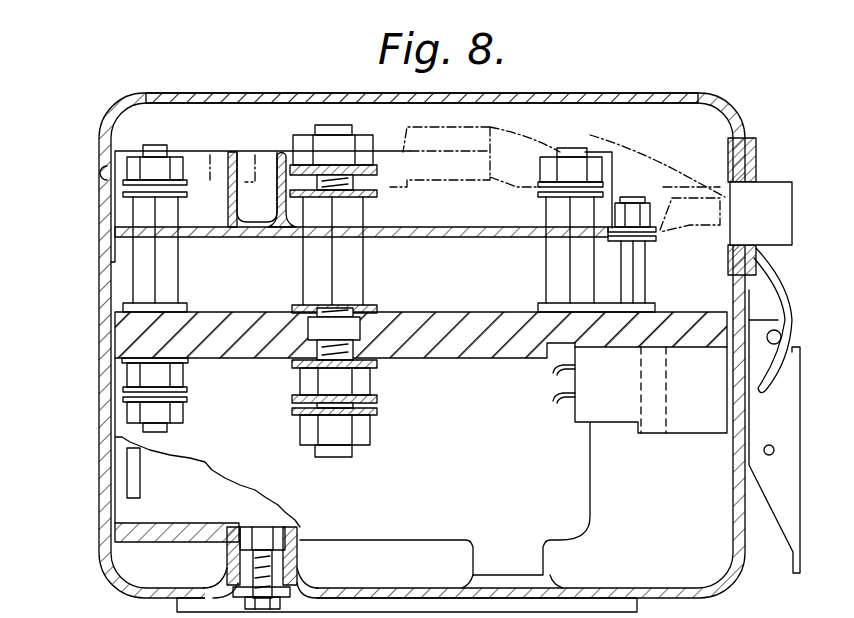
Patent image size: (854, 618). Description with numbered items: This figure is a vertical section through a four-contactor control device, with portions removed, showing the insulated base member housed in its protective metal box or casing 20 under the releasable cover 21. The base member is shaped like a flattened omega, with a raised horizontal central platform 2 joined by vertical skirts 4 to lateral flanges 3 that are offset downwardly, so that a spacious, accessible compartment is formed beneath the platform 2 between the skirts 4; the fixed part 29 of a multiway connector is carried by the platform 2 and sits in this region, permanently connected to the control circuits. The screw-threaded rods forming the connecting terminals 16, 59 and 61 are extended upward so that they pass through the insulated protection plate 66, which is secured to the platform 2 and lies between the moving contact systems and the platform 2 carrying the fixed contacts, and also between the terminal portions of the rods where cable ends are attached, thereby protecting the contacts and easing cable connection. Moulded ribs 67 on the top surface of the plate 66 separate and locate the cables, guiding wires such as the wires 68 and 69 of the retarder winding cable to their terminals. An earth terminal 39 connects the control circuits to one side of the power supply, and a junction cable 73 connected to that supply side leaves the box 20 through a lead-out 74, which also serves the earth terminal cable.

The central platform 2 is at (438, 350).
The lateral flange 3 is at (171, 545).
The vertical portion or skirt 4 is at (577, 496).
The connecting terminal 16 is at (323, 130).
The protective metal box or casing 20 is at (733, 578).
The releasable cover 21 is at (628, 96).
The fixed part of multiway connector 29 is at (688, 425).
The earth terminal 39 is at (626, 195).
The connecting terminal 59 is at (572, 152).
The connecting terminal 61 is at (155, 152).
The insulated protection plate 66 is at (447, 238).
The rib 67 is at (277, 165).
The wire 68 is at (507, 172).
The wire 69 is at (225, 166).
The junction cable 73 is at (660, 198).
The lead-out 74 is at (760, 200).